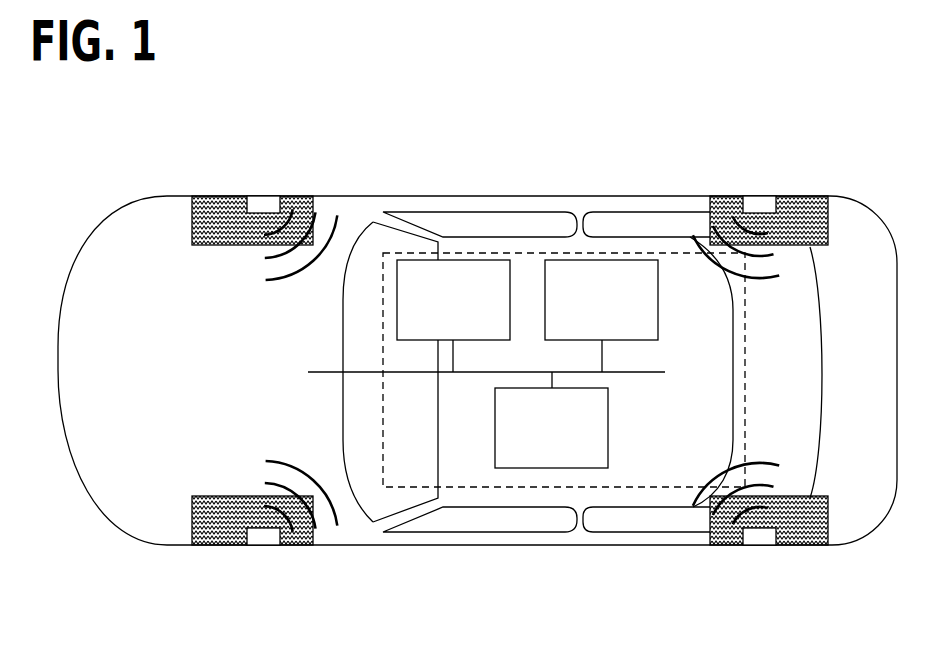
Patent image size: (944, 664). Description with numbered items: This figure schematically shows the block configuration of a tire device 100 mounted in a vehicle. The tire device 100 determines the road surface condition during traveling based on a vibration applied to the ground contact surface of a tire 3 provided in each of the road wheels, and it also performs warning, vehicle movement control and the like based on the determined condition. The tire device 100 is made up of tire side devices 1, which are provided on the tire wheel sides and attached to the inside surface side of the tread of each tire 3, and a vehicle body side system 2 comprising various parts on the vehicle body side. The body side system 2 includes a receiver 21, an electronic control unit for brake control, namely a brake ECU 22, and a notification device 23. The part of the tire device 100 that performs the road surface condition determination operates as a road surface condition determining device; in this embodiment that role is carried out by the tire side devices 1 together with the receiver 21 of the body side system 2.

The tire device 100 is at (395, 172).
The tire side device 1 is at (259, 205).
The vehicle body side system 2 is at (683, 253).
The tire 3 is at (192, 224).
The receiver 21 is at (552, 468).
The brake ECU 22 is at (614, 260).
The notification device 23 is at (467, 260).